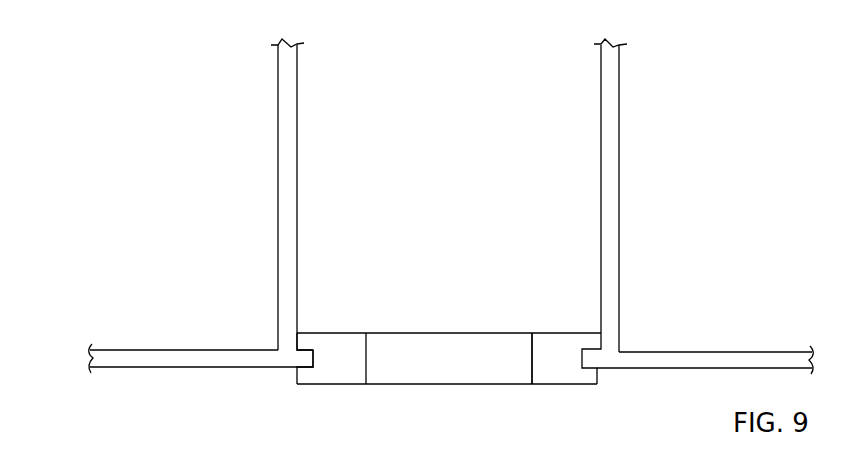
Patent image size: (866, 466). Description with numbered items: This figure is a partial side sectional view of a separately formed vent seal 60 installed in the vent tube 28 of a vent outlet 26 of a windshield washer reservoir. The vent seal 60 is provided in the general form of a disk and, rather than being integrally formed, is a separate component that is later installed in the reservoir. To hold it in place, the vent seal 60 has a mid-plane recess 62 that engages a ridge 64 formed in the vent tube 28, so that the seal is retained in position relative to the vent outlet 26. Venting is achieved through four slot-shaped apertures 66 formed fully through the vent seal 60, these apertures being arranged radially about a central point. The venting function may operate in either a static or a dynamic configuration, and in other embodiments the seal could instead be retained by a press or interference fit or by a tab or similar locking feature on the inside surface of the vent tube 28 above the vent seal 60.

The vent outlet 26 is at (451, 206).
The vent tube 28 is at (604, 284).
The vent seal 60 is at (558, 377).
The mid-plane recess 62 is at (308, 346).
The ridge 64 is at (300, 358).
The slot-shaped apertures 66 is at (488, 350).